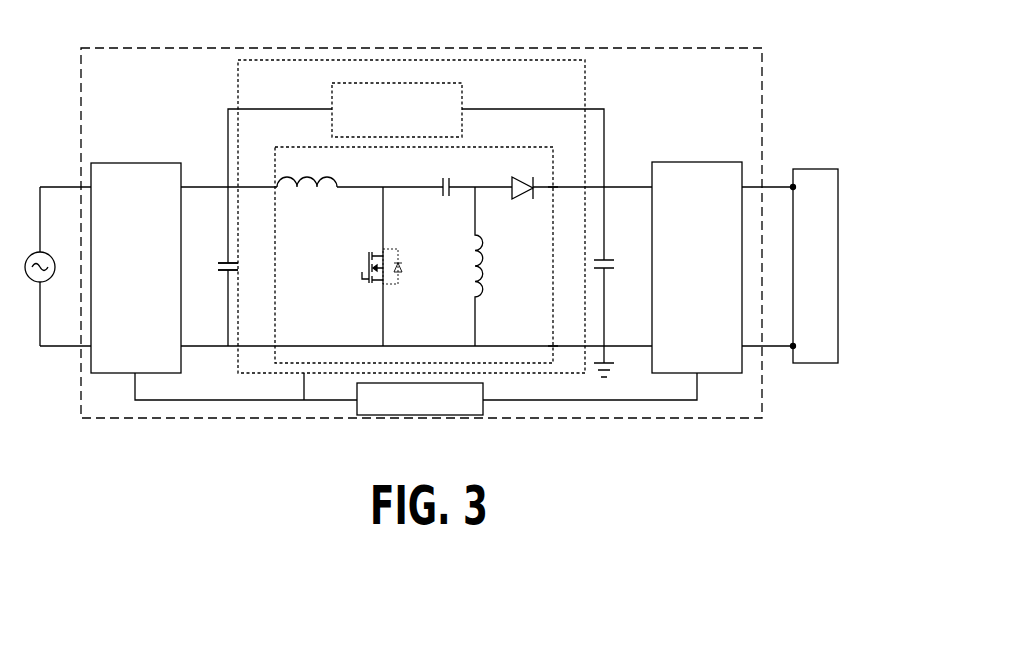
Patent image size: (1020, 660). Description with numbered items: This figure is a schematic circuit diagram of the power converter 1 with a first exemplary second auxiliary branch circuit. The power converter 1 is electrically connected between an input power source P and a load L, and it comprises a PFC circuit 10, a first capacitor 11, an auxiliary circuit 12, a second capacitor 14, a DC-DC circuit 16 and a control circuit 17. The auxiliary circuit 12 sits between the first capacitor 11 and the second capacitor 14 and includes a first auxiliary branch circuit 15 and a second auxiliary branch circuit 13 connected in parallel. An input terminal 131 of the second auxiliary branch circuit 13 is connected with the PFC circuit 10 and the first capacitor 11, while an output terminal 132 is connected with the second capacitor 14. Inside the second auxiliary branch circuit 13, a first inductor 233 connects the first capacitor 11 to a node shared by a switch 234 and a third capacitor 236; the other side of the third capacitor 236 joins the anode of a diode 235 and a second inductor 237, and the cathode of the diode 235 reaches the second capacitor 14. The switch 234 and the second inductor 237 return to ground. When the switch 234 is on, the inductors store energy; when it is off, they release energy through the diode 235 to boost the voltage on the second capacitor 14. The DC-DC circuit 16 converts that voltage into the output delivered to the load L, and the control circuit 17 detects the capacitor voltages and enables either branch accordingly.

The power converter 1 is at (713, 48).
The PFC circuit 10 is at (125, 163).
The first capacitor 11 is at (228, 262).
The auxiliary circuit 12 is at (587, 90).
The second auxiliary branch circuit 13 is at (528, 148).
The second capacitor 14 is at (605, 260).
The first auxiliary branch circuit 15 is at (420, 83).
The DC-DC circuit 16 is at (692, 162).
The control circuit 17 is at (483, 394).
The input terminal 131 is at (245, 267).
The output terminal 132 is at (555, 344).
The first inductor 233 is at (312, 190).
The switch 234 is at (375, 250).
The diode 235 is at (517, 200).
The third capacitor 236 is at (449, 196).
The second inductor 237 is at (476, 237).
The input power source P is at (43, 252).
The load L is at (812, 169).